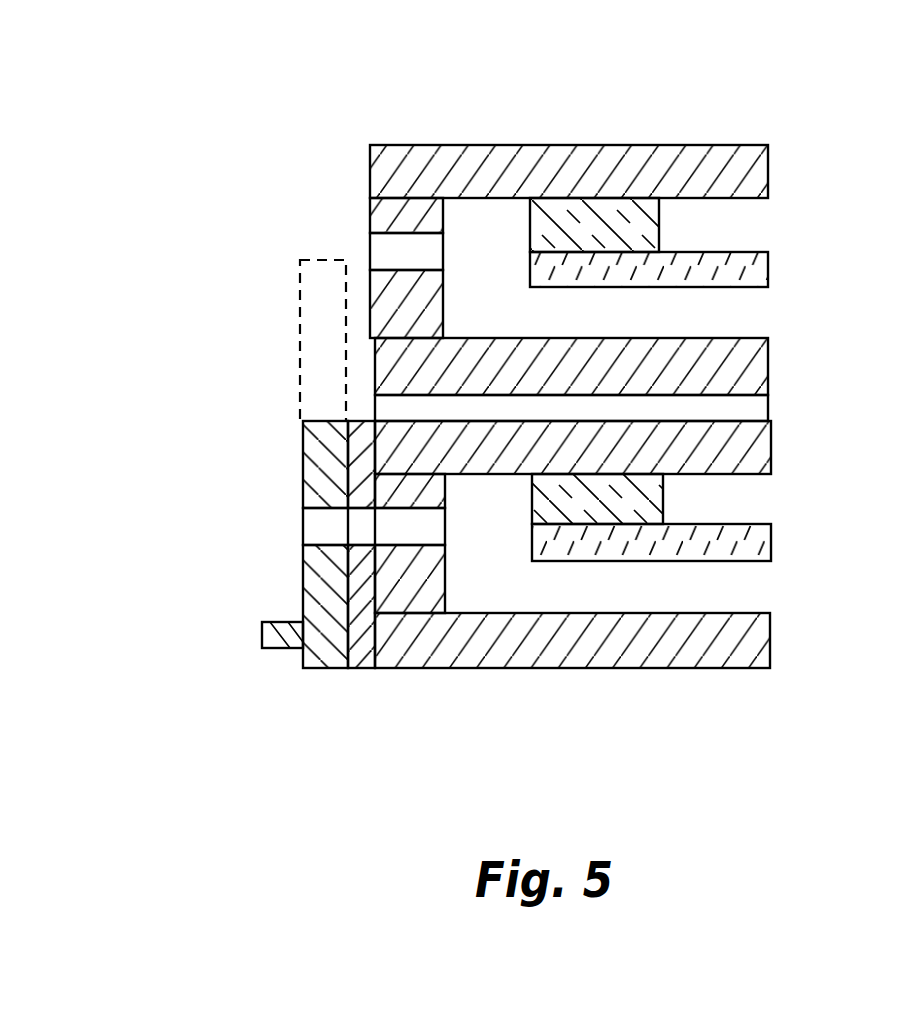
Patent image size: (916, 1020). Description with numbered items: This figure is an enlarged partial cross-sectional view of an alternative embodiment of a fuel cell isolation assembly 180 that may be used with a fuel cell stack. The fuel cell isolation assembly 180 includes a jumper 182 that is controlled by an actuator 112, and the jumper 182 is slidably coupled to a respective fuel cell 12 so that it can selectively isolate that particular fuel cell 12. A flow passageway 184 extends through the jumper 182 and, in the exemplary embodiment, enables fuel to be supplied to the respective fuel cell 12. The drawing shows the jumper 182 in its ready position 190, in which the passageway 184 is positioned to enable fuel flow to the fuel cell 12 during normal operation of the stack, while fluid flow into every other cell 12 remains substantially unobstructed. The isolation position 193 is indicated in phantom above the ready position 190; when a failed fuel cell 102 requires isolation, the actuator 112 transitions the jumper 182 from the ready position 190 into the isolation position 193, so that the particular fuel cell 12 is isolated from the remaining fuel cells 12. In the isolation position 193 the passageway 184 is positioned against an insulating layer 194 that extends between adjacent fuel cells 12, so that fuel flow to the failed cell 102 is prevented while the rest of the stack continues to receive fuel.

The fuel cell 12 is at (755, 172).
The failed fuel cell 102 is at (756, 458).
The actuator 112 is at (262, 635).
The fuel cell isolation assembly 180 is at (663, 103).
The jumper 182 is at (303, 578).
The flow passageway 184 is at (320, 527).
The ready position 190 is at (195, 550).
The isolation position 193 is at (299, 295).
The insulating layer 194 is at (758, 408).